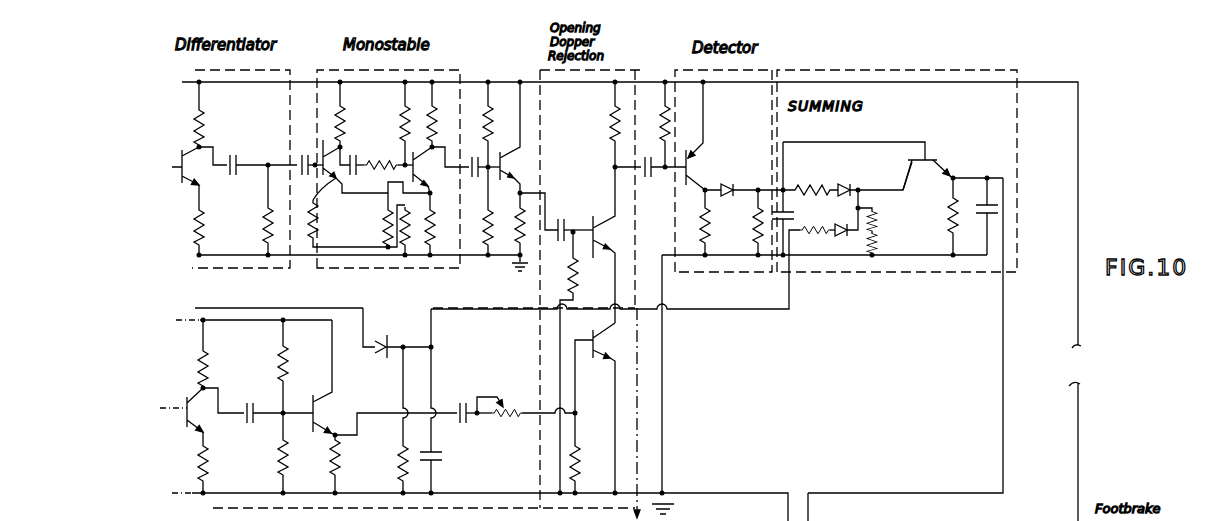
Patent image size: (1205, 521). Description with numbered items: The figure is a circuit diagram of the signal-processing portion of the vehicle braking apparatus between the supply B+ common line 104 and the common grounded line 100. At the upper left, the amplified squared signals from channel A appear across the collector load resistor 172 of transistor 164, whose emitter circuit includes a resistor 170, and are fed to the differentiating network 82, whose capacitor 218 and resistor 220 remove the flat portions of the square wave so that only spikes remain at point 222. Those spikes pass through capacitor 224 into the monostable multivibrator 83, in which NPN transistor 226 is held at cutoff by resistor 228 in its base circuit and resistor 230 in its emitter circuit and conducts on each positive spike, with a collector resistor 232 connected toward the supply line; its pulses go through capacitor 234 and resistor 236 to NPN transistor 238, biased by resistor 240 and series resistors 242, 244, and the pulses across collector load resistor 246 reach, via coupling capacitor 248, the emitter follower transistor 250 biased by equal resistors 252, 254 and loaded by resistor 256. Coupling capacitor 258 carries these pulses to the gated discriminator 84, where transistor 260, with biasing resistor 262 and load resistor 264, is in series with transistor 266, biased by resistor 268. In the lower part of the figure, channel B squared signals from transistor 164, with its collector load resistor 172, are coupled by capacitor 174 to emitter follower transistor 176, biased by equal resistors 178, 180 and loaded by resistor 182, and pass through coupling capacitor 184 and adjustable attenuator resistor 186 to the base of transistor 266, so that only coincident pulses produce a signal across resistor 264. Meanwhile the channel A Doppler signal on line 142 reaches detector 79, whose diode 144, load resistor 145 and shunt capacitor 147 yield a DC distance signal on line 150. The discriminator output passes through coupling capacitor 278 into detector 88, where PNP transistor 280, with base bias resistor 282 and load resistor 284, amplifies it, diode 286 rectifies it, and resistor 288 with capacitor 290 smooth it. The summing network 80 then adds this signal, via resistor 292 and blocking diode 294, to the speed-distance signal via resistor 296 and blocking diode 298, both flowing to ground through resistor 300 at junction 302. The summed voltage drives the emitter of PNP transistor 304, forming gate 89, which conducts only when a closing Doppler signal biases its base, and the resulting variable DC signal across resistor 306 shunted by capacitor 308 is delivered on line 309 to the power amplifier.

The detector 79 is at (380, 334).
The summing network 80 is at (877, 128).
The differentiating network 82 is at (291, 66).
The monostable multivibrator 83 is at (461, 66).
The gated discriminator 84 is at (637, 66).
The detector 88 is at (766, 66).
The gate 89 is at (932, 128).
The common grounded line 100 is at (250, 255).
The B+ common line 104 is at (496, 82).
The line 142 is at (282, 305).
The diode 144 is at (386, 357).
The load resistor 145 is at (402, 455).
The capacitor 147 is at (442, 456).
The line 150 is at (465, 309).
The transistor 164 is at (181, 160).
The resistor 170 is at (199, 232).
The load resistor 172 is at (198, 112).
The capacitor 174 is at (251, 405).
The NPN transistor 176 is at (308, 403).
The resistor 178 is at (287, 367).
The resistor 180 is at (287, 470).
The load resistor 182 is at (336, 472).
The coupling capacitor 184 is at (462, 399).
The adjustable attenuator resistor 186 is at (503, 420).
The capacitor 218 is at (235, 159).
The resistor 220 is at (265, 234).
The point 222 is at (268, 163).
The capacitor 224 is at (301, 154).
The NPN transistor 226 is at (337, 196).
The resistor 228 is at (316, 235).
The resistor 230 is at (432, 250).
The resistor 232 is at (347, 104).
The capacitor 234 is at (347, 134).
The resistor 236 is at (353, 163).
The NPN transistor 238 is at (421, 183).
The resistor 240 is at (398, 112).
The resistor 242 is at (388, 250).
The resistor 244 is at (407, 250).
The collector load resistor 246 is at (434, 122).
The coupling capacitor 248 is at (473, 157).
The emitter follower NPN transistor 250 is at (505, 164).
The resistor 252 is at (502, 112).
The resistor 254 is at (486, 250).
The load resistor 256 is at (520, 226).
The coupling capacitor 258 is at (559, 258).
The NPN transistor 260 is at (596, 217).
The biasing resistor 262 is at (574, 286).
The load resistor 264 is at (614, 132).
The NPN transistor 266 is at (590, 326).
The resistor 268 is at (576, 455).
The coupling capacitor 278 is at (648, 177).
The PNP transistor 280 is at (693, 167).
The base bias resistor 282 is at (667, 119).
The load resistor 284 is at (706, 245).
The diode 286 is at (731, 185).
The resistor 288 is at (757, 219).
The capacitor 290 is at (795, 215).
The resistor 292 is at (807, 189).
The blocking diode 294 is at (854, 189).
The resistor 296 is at (818, 244).
The blocking diode 298 is at (850, 240).
The resistor 300 is at (873, 238).
The junction 302 is at (872, 208).
The PNP transistor 304 is at (927, 154).
The resistor 306 is at (953, 236).
The capacitor 308 is at (978, 200).
The line 309 is at (904, 494).